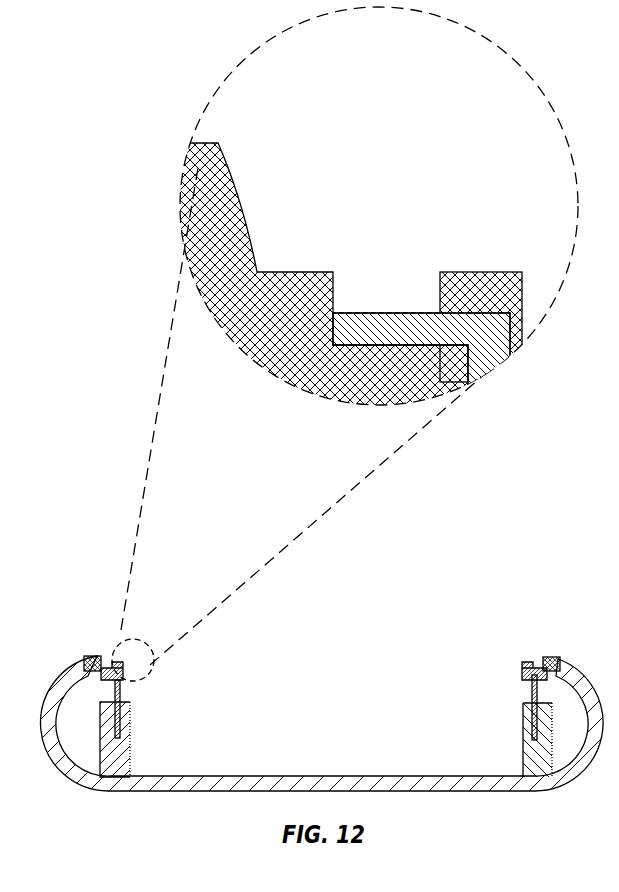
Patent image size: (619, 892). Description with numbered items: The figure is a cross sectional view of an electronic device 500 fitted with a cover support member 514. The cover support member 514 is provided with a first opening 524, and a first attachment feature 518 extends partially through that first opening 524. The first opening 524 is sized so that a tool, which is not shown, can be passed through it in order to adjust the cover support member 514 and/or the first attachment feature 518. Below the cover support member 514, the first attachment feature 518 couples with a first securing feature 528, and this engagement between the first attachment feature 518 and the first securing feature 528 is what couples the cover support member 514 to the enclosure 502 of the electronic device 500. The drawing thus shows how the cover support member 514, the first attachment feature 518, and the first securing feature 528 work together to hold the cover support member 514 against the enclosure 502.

The electronic device 500 is at (323, 629).
The enclosure 502 is at (565, 667).
The cover support member 514 is at (308, 272).
The first attachment feature 518 is at (424, 312).
The first opening 524 is at (368, 250).
The first securing feature 528 is at (131, 762).